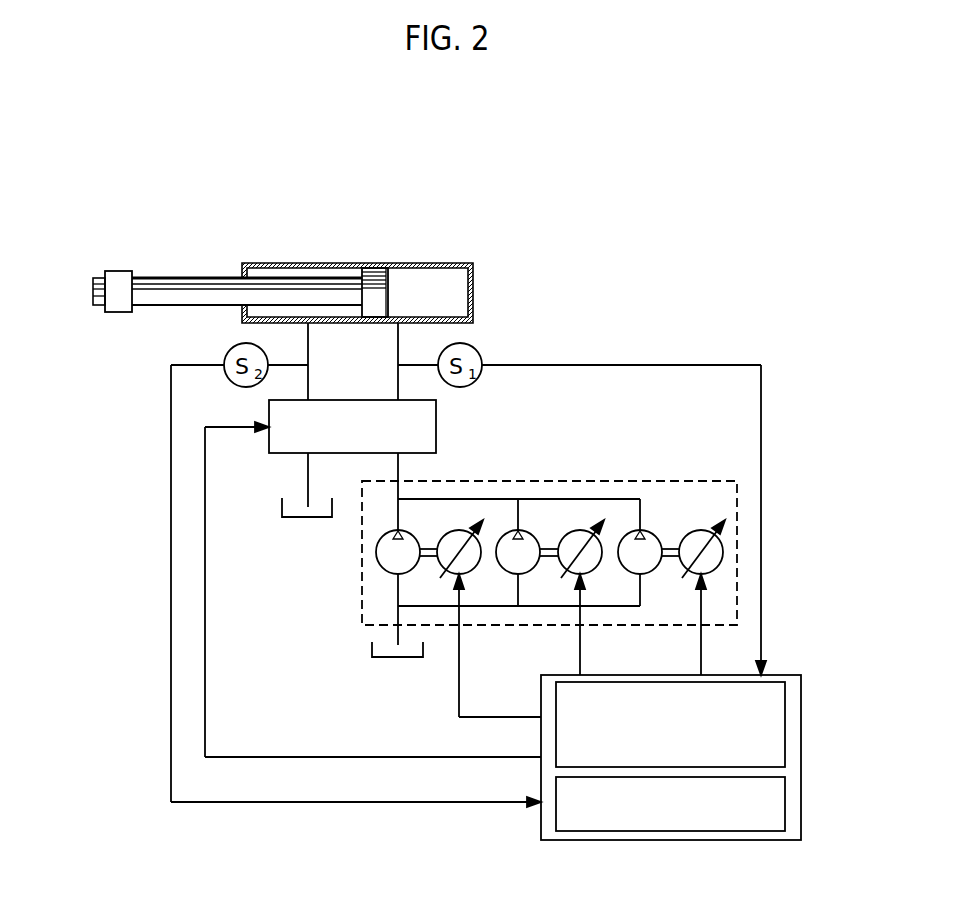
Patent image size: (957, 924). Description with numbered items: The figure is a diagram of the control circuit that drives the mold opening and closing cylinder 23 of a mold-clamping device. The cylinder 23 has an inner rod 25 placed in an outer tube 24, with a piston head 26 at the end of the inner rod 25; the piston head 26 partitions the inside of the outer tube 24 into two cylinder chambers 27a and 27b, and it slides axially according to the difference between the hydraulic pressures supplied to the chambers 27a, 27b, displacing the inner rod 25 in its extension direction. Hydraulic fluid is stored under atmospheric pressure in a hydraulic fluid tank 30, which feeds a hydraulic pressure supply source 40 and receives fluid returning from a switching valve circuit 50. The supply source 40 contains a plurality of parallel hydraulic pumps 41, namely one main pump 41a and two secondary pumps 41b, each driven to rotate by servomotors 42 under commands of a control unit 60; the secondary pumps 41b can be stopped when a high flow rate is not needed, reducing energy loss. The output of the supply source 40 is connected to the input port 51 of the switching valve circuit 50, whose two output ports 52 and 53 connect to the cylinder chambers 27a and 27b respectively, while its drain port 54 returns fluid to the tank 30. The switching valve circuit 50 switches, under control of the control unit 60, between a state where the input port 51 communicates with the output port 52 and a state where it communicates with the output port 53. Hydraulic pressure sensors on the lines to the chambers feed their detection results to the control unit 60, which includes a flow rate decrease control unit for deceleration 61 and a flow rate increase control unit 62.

The mold opening and closing cylinder 23 is at (287, 248).
The outer tube 24 is at (431, 262).
The inner rod 25 is at (187, 278).
The piston head 26 is at (389, 285).
The cylinder chamber 27a is at (453, 280).
The cylinder chamber 27b is at (282, 273).
The hydraulic fluid tank 30 is at (282, 504).
The hydraulic pressure supply source 40 is at (490, 564).
The hydraulic pumps 41 is at (462, 598).
The main pump 41a is at (377, 552).
The secondary pumps 41b is at (505, 572).
The servomotors 42 is at (458, 530).
The switching valve circuit 50 is at (438, 425).
The input port 51 is at (395, 453).
The output port 52 is at (397, 400).
The output port 53 is at (308, 400).
The drain port 54 is at (307, 453).
The control unit 60 is at (694, 792).
The flow rate decrease control unit for deceleration 61 is at (787, 725).
The flow rate increase control unit 62 is at (787, 803).